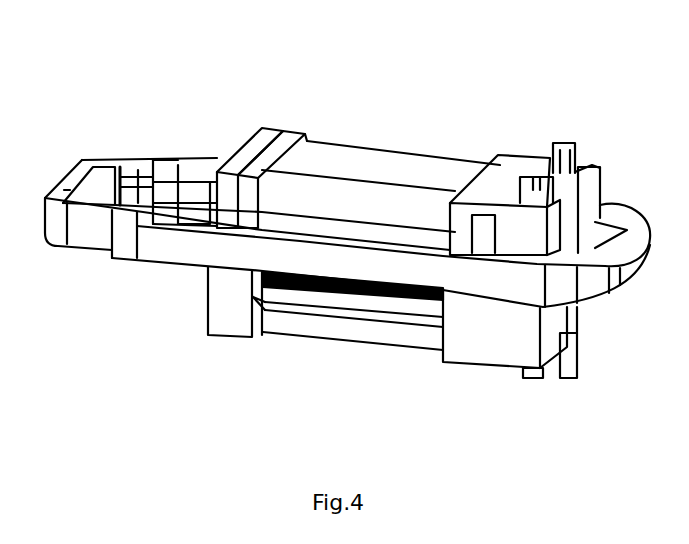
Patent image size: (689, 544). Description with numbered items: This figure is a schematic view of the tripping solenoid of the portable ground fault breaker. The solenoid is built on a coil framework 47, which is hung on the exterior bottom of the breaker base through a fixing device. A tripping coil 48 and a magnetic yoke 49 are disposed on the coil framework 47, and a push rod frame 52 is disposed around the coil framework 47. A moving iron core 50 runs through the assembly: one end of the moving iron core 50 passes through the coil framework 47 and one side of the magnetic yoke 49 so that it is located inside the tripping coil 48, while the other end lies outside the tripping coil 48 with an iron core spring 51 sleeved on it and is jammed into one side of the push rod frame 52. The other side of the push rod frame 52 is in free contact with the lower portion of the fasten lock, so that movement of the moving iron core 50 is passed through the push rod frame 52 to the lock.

The coil framework 47 is at (502, 213).
The tripping coil 48 is at (246, 153).
The magnetic yoke 49 is at (278, 153).
The moving iron core 50 is at (100, 190).
The iron core spring 51 is at (177, 177).
The push rod frame 52 is at (195, 245).